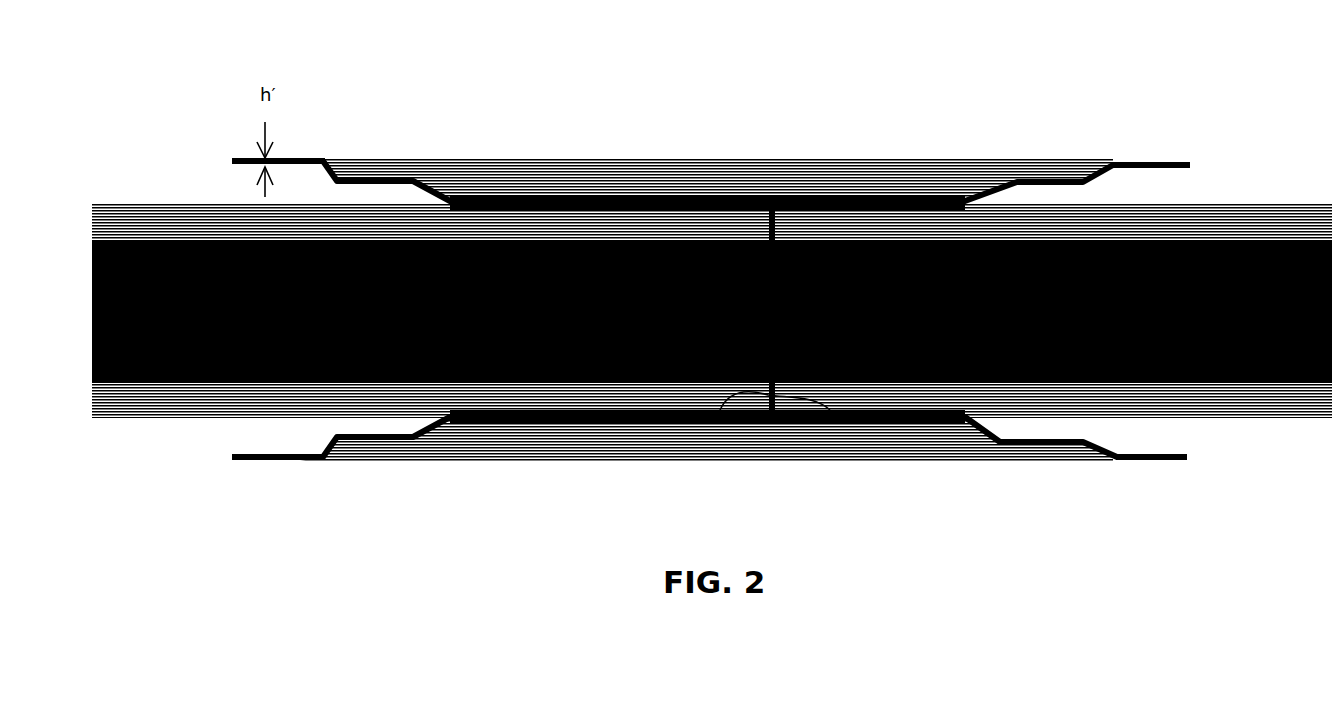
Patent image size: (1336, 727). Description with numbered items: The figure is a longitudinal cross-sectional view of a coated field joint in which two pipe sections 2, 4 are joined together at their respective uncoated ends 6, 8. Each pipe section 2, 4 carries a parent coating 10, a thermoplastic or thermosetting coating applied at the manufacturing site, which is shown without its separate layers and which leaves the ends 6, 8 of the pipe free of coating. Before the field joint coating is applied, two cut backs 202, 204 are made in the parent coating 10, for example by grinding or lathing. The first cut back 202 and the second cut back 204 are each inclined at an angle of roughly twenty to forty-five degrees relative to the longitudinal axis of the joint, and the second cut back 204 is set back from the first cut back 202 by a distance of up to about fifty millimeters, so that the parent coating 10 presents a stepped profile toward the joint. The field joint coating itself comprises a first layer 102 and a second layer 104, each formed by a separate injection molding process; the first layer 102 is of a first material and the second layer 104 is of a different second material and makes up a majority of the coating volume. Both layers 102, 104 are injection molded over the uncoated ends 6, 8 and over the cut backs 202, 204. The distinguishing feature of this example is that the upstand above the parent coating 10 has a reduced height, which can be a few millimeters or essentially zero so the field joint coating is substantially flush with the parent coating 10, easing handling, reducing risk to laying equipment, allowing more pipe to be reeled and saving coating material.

The parent coating 10 is at (198, 190).
The pipe section 2 is at (548, 402).
The pipe section 4 is at (918, 405).
The uncoated end 6 is at (715, 423).
The uncoated end 8 is at (843, 423).
The first layer 102 is at (863, 197).
The second layer 104 is at (688, 197).
The first cut back 202 is at (423, 178).
The second cut back 204 is at (325, 158).